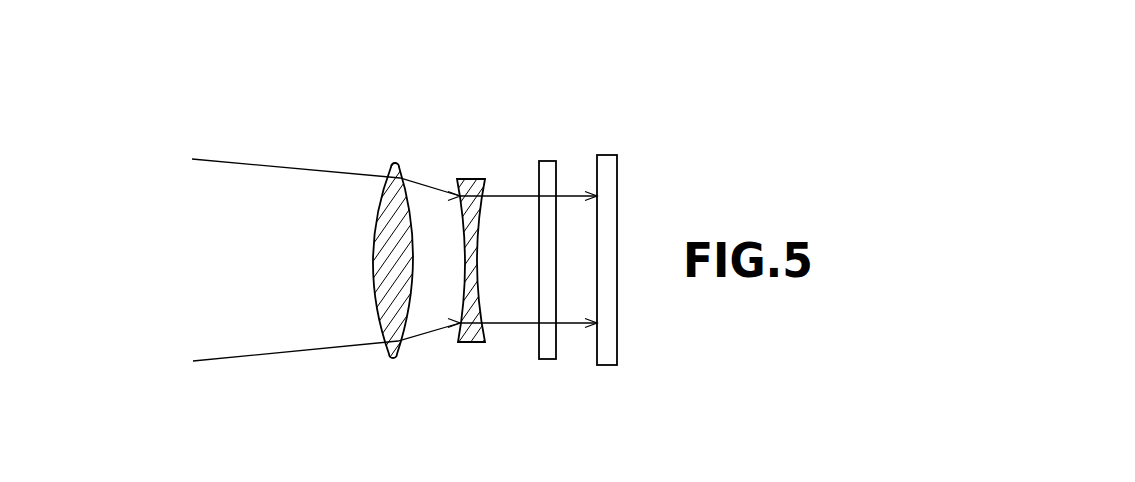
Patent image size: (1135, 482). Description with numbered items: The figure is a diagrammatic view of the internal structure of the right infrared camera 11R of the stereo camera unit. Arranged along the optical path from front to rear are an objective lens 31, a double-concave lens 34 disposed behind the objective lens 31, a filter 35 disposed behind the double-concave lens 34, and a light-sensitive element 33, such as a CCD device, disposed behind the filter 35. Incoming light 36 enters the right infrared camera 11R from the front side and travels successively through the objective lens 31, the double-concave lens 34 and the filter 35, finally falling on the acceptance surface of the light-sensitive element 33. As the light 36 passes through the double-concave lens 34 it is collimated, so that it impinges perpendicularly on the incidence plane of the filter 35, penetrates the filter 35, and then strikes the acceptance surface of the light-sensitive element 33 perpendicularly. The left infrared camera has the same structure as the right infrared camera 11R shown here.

The right infrared camera 11R is at (672, 127).
The incoming light 36 is at (294, 190).
The objective lens 31 is at (396, 160).
The double-concave lens 34 is at (473, 177).
The filter 35 is at (550, 160).
The light-sensitive element 33 is at (612, 158).